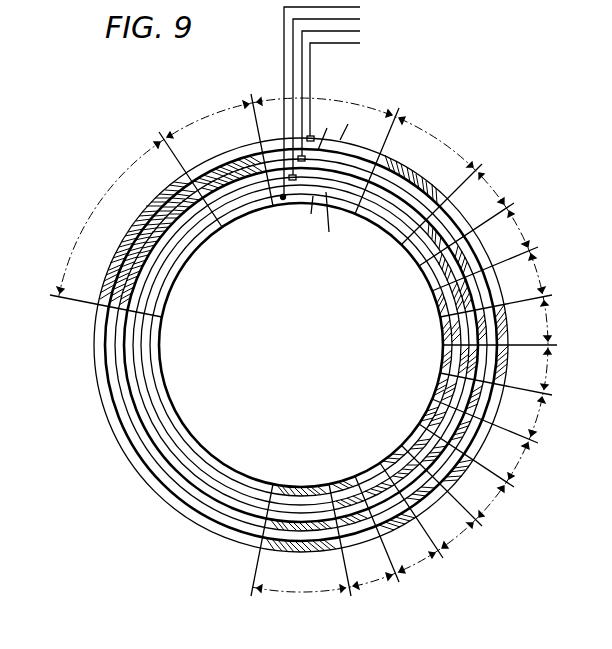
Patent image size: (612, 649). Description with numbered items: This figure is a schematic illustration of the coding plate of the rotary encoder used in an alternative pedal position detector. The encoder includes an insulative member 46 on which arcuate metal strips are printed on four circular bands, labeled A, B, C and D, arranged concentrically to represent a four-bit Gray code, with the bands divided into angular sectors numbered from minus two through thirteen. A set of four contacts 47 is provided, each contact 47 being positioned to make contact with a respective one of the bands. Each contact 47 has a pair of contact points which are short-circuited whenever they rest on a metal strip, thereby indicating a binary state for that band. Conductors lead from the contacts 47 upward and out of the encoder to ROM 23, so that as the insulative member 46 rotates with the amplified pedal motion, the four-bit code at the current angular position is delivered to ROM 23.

The insulative member 46 is at (250, 462).
The contacts 47 is at (282, 202).
The ROM 23 is at (366, 3).